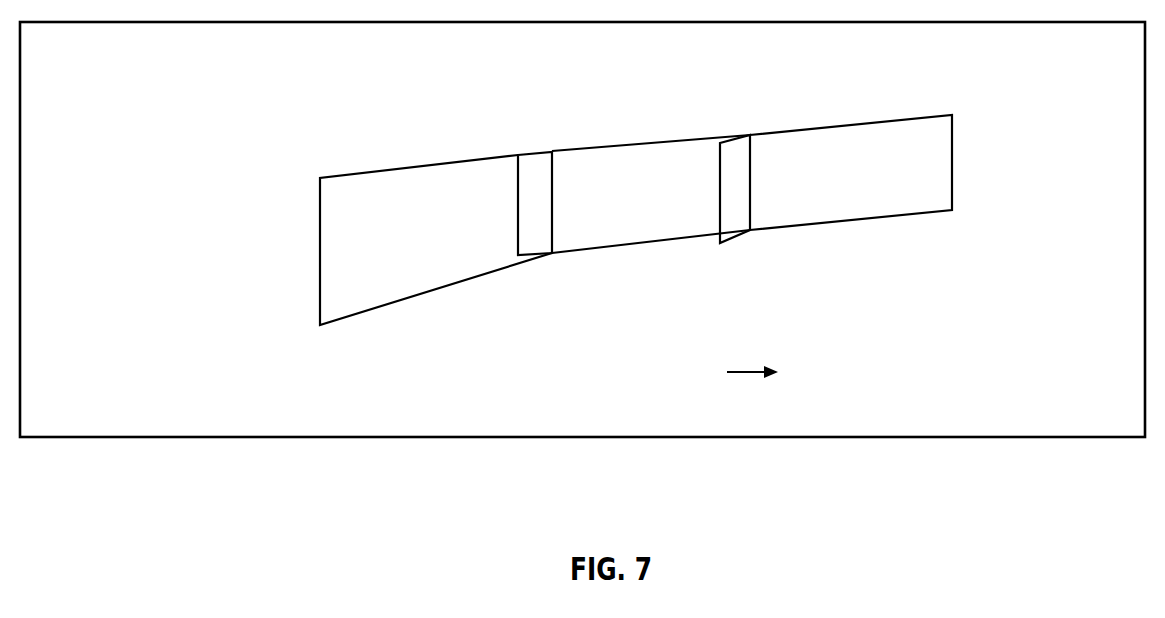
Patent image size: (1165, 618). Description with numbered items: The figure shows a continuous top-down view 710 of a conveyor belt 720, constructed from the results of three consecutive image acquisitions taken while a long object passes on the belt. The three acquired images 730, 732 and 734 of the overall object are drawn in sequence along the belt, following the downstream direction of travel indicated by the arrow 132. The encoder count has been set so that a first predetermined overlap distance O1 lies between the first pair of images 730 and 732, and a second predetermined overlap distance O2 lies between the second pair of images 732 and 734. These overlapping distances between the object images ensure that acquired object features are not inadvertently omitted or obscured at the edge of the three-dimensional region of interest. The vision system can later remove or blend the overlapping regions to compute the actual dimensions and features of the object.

The conveyor belt 720 is at (323, 415).
The third acquired image 734 is at (425, 152).
The second acquired image 732 is at (641, 128).
The first acquired image 730 is at (835, 110).
The second predetermined overlap distance O2 is at (513, 148).
The first predetermined overlap distance O1 is at (710, 128).
The continuous top-down view 710 is at (580, 402).
The arrow 132 is at (748, 373).